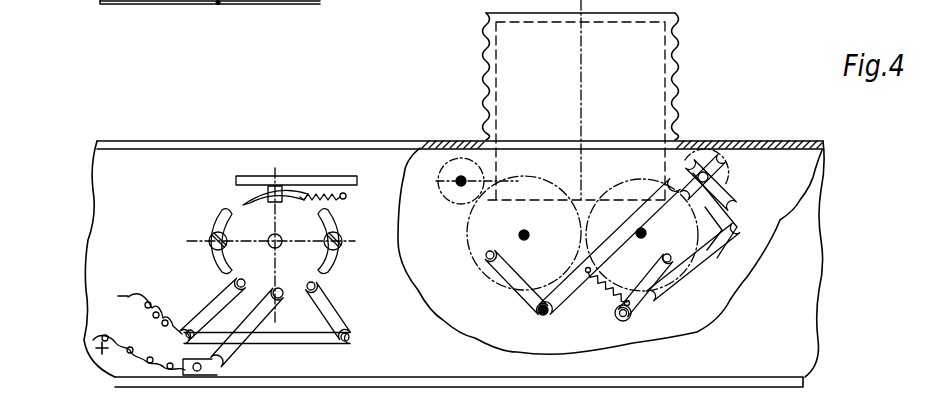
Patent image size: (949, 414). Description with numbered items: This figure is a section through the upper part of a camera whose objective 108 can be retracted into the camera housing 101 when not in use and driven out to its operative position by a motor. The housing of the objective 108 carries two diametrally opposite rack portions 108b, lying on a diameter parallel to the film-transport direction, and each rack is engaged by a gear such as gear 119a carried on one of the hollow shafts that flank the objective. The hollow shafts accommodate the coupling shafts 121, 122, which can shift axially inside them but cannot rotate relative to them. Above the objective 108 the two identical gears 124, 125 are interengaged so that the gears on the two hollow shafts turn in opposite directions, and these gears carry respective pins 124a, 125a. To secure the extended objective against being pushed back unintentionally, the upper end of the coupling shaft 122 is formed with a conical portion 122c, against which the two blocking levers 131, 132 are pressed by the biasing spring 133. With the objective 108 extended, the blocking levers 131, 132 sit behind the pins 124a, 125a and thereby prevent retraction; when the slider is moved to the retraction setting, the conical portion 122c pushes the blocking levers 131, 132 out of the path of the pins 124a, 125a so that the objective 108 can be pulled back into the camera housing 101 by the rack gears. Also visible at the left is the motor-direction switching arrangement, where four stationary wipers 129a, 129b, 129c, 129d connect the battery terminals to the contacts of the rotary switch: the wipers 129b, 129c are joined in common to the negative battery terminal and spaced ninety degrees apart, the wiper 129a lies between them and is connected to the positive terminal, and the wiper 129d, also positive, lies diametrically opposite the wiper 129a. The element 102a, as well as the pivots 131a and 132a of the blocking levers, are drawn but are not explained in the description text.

The camera housing 101 is at (783, 141).
The ratchet link 102a is at (268, 235).
The objective 108 is at (650, 72).
The rack portions 108b is at (486, 90).
The gear 119a is at (441, 207).
The coupling shaft 121 is at (468, 180).
The coupling shaft 122 is at (716, 150).
The conical portion 122c is at (727, 184).
The gear 124 is at (557, 185).
The pin 124a is at (492, 262).
The gear 125 is at (640, 178).
The pin 125a is at (688, 292).
The wiper 129a is at (232, 350).
The wiper 129b is at (208, 302).
The wiper 129c is at (330, 307).
The wiper 129d is at (326, 0).
The blocking lever 131 is at (518, 297).
The pivot 131a is at (545, 245).
The blocking lever 132 is at (646, 300).
The pivot 132a is at (619, 220).
The biasing spring 133 is at (596, 293).